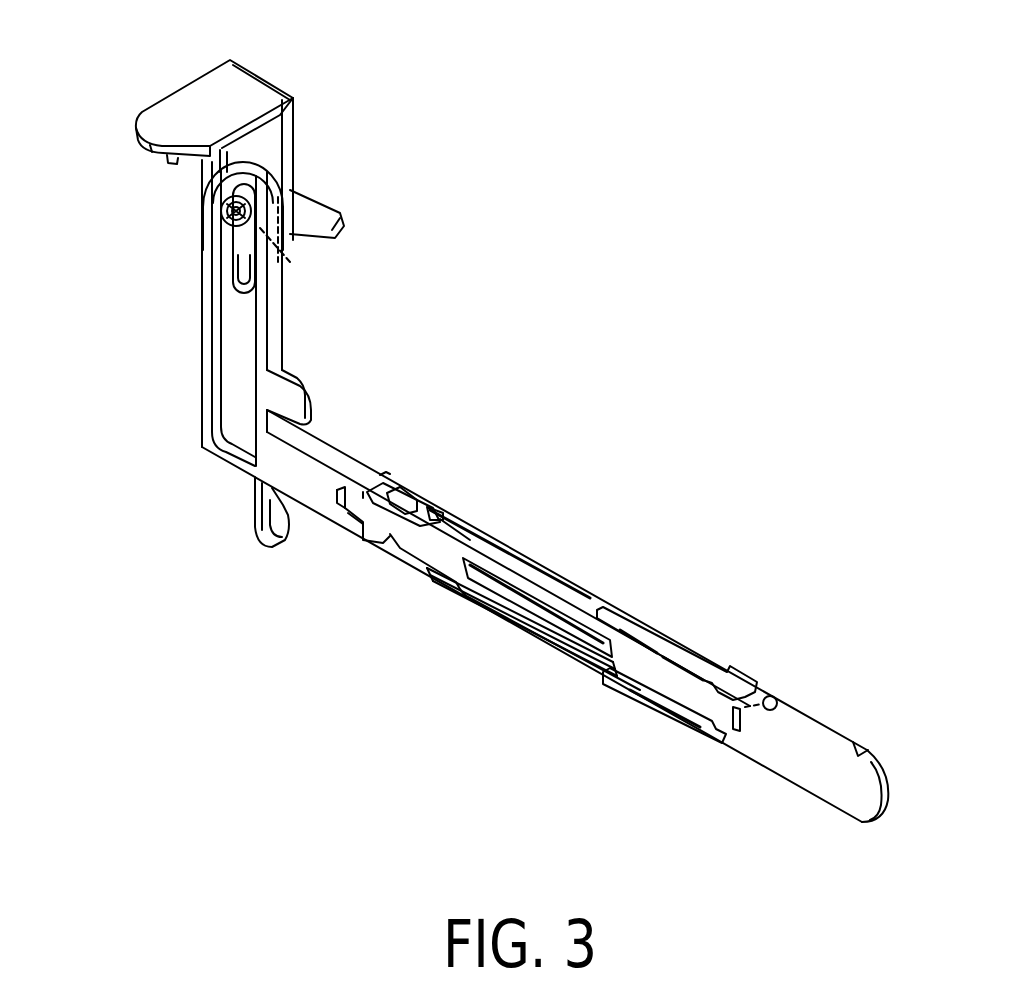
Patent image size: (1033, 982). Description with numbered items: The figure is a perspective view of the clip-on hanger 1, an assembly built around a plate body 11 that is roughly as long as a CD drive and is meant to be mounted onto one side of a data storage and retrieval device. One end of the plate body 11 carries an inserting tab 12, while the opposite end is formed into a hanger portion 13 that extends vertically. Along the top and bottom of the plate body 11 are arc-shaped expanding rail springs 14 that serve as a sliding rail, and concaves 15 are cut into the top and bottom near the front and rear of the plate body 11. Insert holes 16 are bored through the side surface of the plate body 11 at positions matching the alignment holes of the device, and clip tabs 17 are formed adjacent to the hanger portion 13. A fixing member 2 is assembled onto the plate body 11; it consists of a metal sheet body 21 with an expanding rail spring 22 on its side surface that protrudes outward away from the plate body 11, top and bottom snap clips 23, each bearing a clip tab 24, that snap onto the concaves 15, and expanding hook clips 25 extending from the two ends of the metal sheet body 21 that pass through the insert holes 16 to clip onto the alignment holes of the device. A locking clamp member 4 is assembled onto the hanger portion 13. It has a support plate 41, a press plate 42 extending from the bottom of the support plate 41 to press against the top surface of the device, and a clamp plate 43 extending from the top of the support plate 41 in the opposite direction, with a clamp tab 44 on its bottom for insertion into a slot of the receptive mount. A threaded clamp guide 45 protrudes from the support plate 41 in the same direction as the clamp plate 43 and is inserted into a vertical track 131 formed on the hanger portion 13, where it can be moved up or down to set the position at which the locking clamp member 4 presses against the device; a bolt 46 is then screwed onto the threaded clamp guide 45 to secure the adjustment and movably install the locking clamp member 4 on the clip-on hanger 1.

The clip-on hanger 1 is at (596, 541).
The fixing member 2 is at (518, 640).
The locking clamp member 4 is at (282, 60).
The plate body 11 is at (518, 556).
The inserting tab 12 is at (870, 800).
The hanger portion 13 is at (205, 335).
The vertical track 131 is at (240, 263).
The expanding rail spring 14 is at (670, 637).
The concave 15 is at (440, 505).
The insert hole 16 is at (340, 512).
The clip tab 17 is at (265, 520).
The metal sheet body 21 is at (392, 535).
The expanding rail spring 22 is at (515, 604).
The snap clip 23 is at (383, 483).
The clip tab 24 is at (408, 492).
The expanding hook clip 25 is at (780, 703).
The support plate 41 is at (293, 167).
The press plate 42 is at (313, 203).
The clamp plate 43 is at (175, 100).
The clamp tab 44 is at (197, 166).
The threaded clamp guide 45 is at (290, 262).
The bolt 46 is at (238, 206).